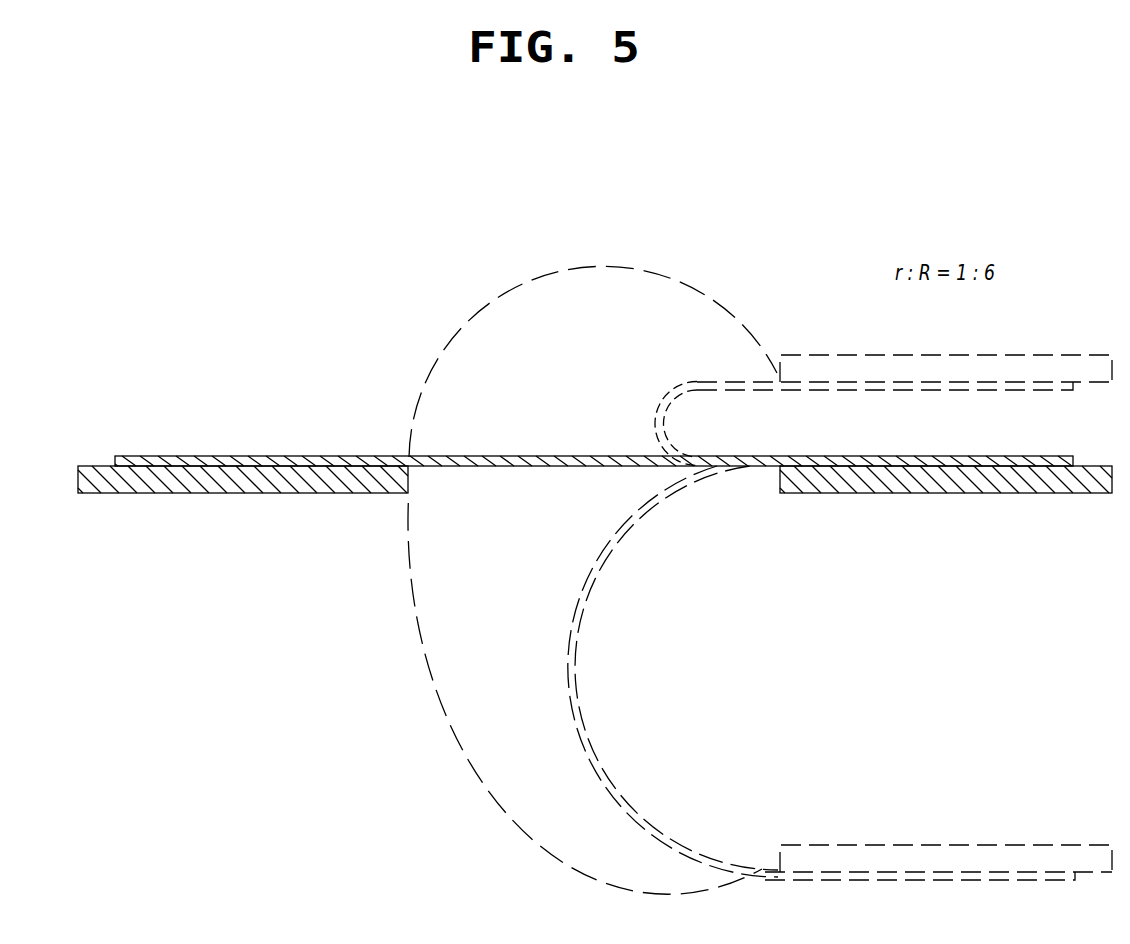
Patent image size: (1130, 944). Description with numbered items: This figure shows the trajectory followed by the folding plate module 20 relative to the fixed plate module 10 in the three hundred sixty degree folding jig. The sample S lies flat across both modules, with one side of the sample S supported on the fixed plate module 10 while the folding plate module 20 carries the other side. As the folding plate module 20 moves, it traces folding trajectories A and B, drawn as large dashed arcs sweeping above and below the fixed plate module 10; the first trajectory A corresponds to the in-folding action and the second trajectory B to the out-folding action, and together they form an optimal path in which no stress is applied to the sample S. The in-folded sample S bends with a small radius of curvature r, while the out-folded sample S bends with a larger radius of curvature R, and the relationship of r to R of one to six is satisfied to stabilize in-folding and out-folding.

The fixed plate module 10 is at (1003, 503).
The folding plate module 20 is at (212, 508).
The sample S is at (210, 435).
The radius of curvature in the in-folding state r is at (673, 401).
The radius of curvature in the out-folding state R is at (605, 561).
The first trajectory A is at (593, 361).
The second trajectory B is at (585, 698).